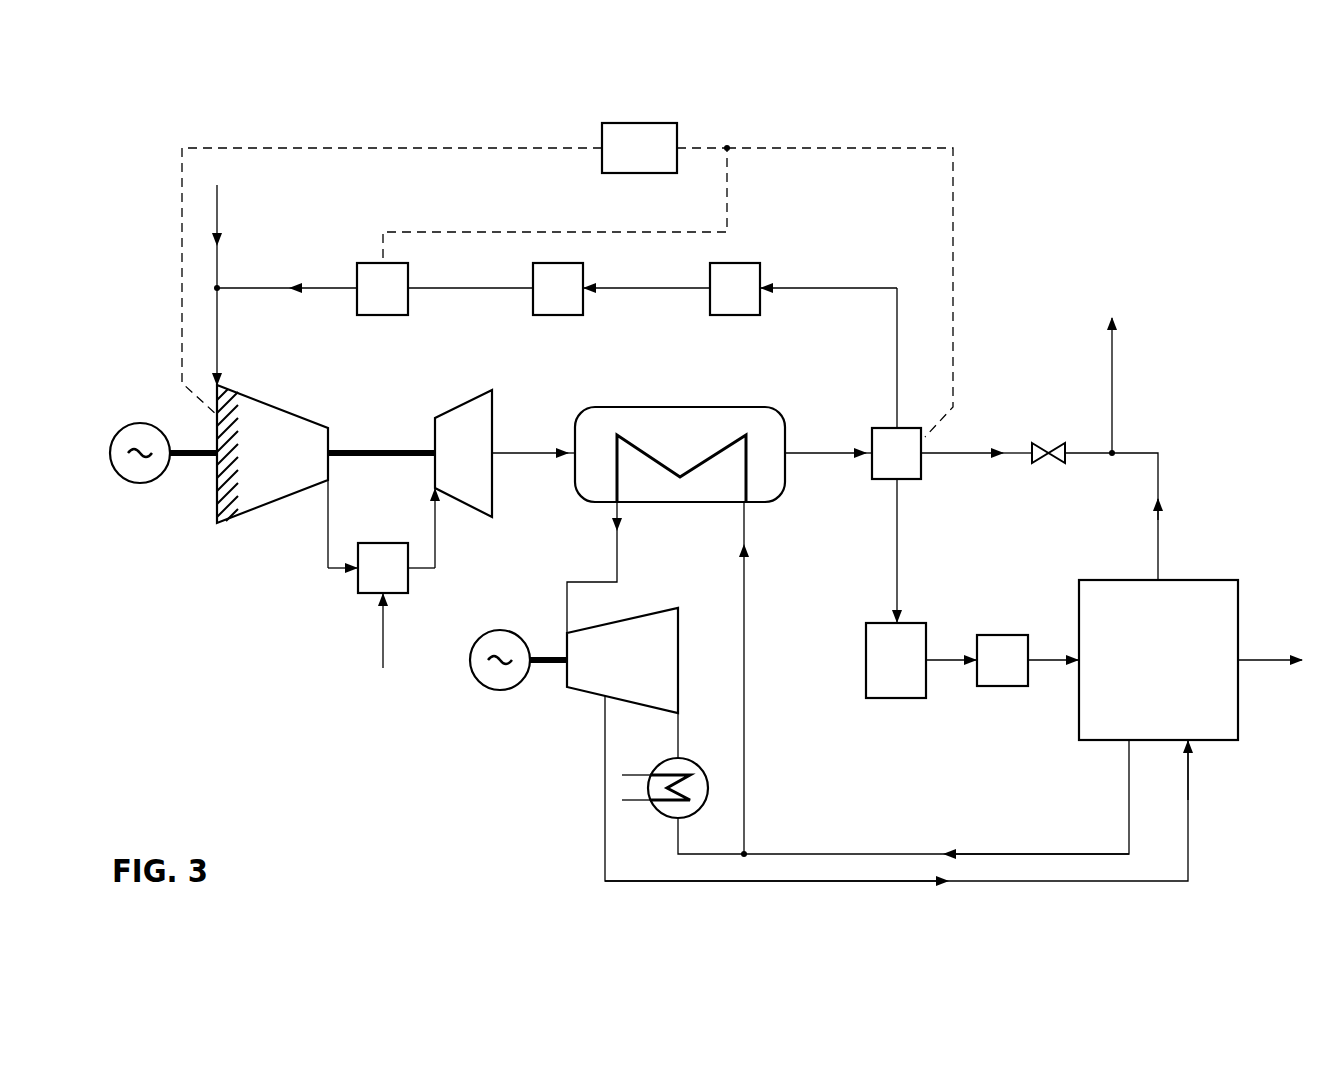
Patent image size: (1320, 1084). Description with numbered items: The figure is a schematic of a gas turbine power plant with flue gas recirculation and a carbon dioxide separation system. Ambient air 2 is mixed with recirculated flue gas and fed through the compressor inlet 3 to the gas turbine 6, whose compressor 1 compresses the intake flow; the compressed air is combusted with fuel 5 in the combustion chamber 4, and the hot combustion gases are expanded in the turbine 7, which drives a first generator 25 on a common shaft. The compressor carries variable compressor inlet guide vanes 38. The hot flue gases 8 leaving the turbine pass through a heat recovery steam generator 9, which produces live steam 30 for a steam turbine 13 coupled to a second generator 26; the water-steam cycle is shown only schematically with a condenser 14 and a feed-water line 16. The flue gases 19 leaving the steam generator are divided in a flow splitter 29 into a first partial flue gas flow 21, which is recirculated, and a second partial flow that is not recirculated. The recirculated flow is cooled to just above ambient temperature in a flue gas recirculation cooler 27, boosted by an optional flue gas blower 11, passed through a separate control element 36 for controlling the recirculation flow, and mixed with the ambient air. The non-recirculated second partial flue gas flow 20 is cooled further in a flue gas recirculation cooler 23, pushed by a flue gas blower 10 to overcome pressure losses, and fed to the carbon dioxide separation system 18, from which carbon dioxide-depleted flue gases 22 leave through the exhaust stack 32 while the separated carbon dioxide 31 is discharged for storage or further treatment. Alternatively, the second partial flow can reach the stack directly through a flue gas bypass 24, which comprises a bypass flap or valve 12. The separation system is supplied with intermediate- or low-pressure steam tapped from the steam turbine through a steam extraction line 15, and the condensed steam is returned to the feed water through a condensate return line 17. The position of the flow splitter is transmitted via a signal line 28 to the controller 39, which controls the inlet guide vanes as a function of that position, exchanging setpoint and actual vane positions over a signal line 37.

The compressor 1 is at (272, 454).
The ambient air 2 is at (218, 208).
The compressor inlet 3 is at (217, 338).
The combustion chamber 4 is at (381, 536).
The fuel 5 is at (383, 647).
The gas turbine 6 is at (381, 418).
The turbine 7 is at (463, 453).
The hot flue gases 8 is at (528, 453).
The heat recovery steam generator 9 is at (680, 454).
The flue gas blower 10 is at (1027, 660).
The flue gas blower 11 is at (621, 289).
The valve 12 is at (1071, 401).
The steam turbine 13 is at (622, 660).
The condenser 14 is at (670, 809).
The steam extraction line 15 is at (877, 881).
The feed-water line 16 is at (744, 733).
The condensate return line 17 is at (1021, 854).
The carbon dioxide separation system 18 is at (1158, 660).
The flue gases 19 is at (828, 453).
The non-recirculated second partial flue gas flow 20 is at (897, 548).
The first partial flue gas flow 21 is at (828, 288).
The carbon dioxide-depleted flue gases 22 is at (1133, 453).
The flue gas recirculation cooler 23 is at (921, 660).
The flue gas bypass 24 is at (963, 457).
The first generator 25 is at (140, 483).
The second generator 26 is at (500, 690).
The flue gas recirculation cooler 27 is at (735, 289).
The signal line 28 is at (953, 232).
The flow splitter 29 is at (896, 453).
The live steam 30 is at (617, 555).
The carbon dioxide 31 is at (1270, 663).
The exhaust stack 32 is at (1112, 365).
The control element 36 is at (375, 289).
The signal line 37 is at (459, 148).
The variable compressor inlet guide vanes 38 is at (230, 523).
The controller 39 is at (639, 148).